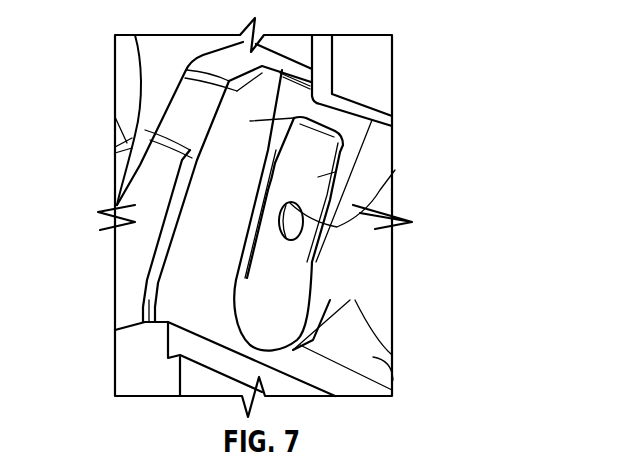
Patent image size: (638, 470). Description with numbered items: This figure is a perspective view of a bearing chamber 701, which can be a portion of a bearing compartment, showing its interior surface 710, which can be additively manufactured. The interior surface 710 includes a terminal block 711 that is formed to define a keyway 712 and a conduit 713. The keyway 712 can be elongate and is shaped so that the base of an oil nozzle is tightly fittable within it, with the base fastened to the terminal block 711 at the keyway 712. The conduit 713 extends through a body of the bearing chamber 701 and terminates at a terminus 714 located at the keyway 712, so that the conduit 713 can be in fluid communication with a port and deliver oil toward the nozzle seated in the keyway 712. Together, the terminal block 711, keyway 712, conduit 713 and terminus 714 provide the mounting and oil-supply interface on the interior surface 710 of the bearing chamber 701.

The bearing chamber 701 is at (117, 137).
The interior surface 710 is at (133, 196).
The terminal block 711 is at (197, 283).
The keyway 712 is at (350, 163).
The conduit 713 is at (318, 177).
The terminus 714 is at (292, 226).